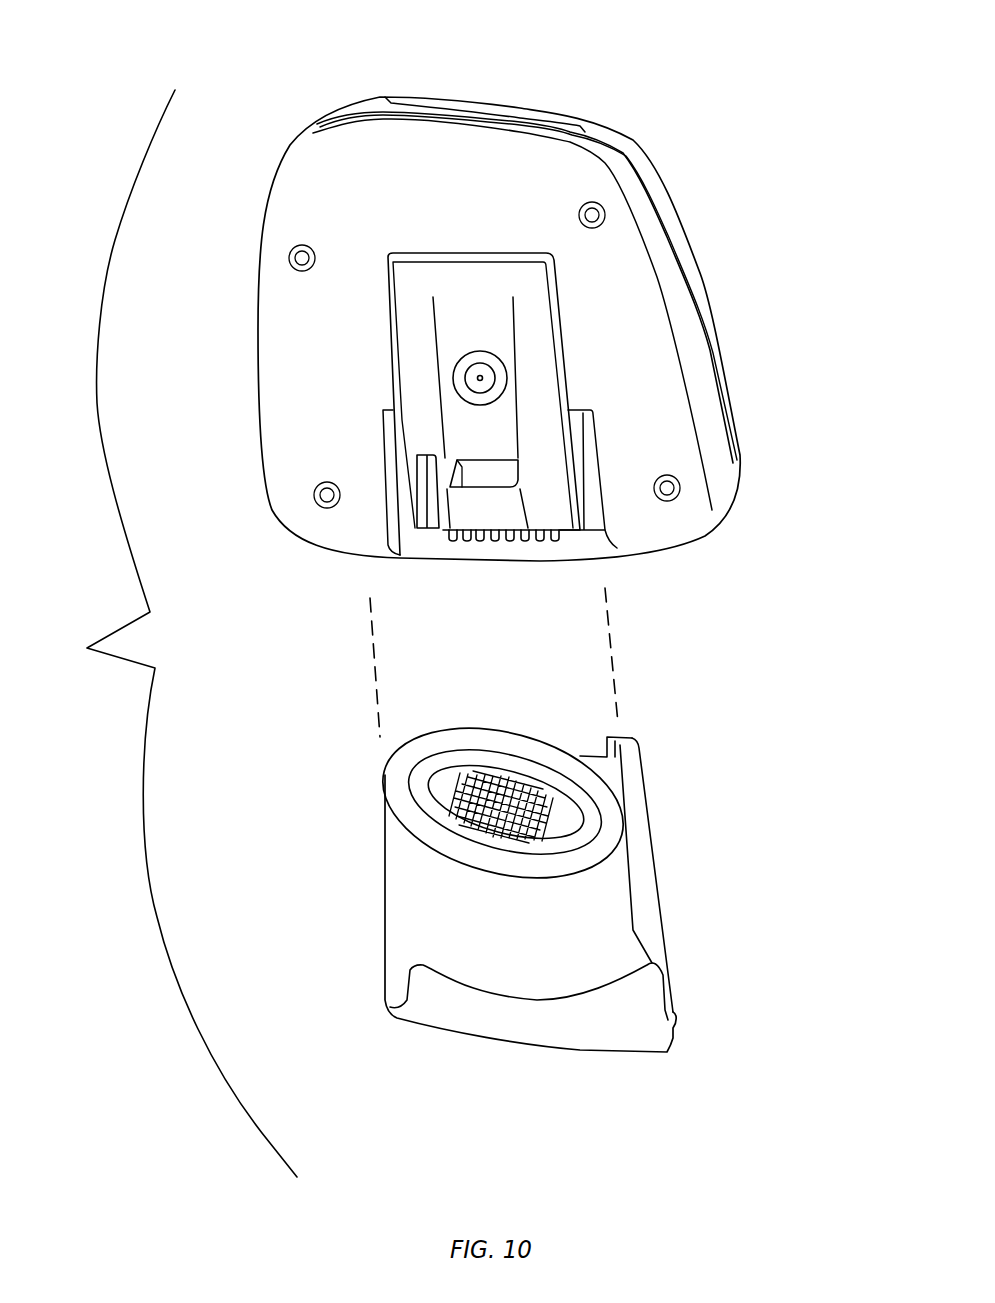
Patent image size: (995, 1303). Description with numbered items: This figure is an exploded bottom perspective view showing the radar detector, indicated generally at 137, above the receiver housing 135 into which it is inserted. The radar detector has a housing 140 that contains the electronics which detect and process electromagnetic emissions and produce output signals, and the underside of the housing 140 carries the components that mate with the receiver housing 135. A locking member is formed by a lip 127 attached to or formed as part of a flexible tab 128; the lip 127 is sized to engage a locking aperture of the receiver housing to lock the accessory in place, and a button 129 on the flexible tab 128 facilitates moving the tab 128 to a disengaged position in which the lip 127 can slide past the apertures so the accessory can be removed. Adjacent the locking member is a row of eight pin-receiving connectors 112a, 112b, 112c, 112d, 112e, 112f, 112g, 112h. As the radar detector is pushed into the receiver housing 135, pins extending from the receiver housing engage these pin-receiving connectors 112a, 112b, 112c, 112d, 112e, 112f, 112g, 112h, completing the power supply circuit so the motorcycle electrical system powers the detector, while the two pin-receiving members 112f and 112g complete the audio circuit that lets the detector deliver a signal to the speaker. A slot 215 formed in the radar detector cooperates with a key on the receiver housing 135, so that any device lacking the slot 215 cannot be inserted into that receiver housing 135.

The cover assembly 137 is at (688, 117).
The housing 140 is at (693, 370).
The flexible tab 128 is at (500, 435).
The button 129 is at (483, 377).
The lip 127 is at (507, 482).
The slot 215 is at (423, 508).
The pin-receiving connector 112a is at (558, 541).
The pin-receiving connector 112b is at (547, 543).
The pin-receiving connector 112c is at (530, 543).
The pin-receiving connector 112d is at (514, 541).
The pin-receiving connector 112e is at (498, 541).
The pin-receiving member 112f is at (486, 541).
The pin-receiving member 112g is at (465, 540).
The pin-receiving connector 112h is at (447, 543).
The receiver housing 135 is at (600, 922).